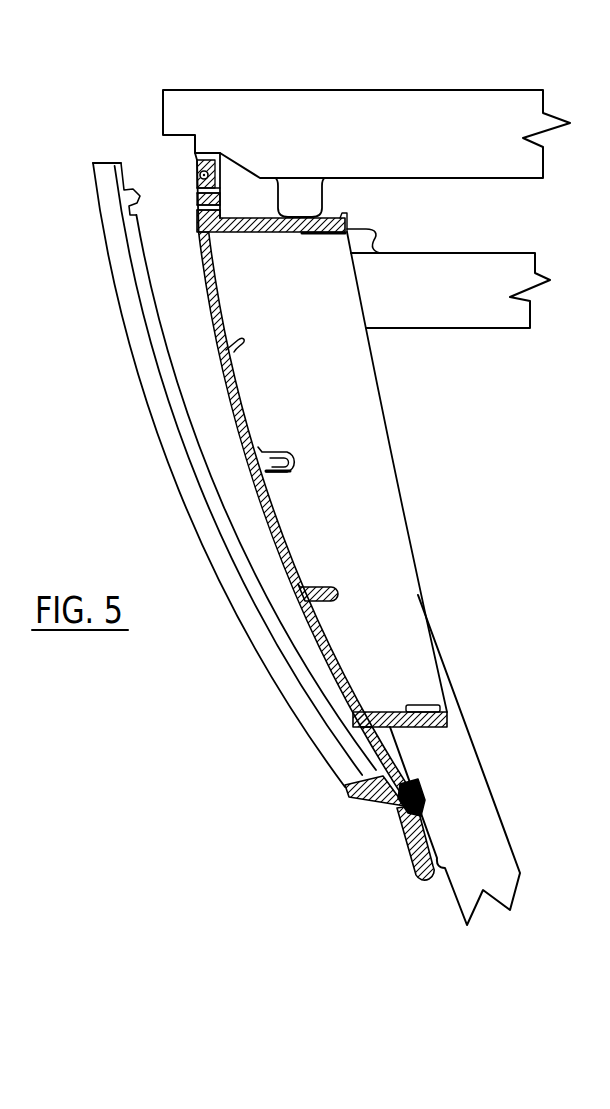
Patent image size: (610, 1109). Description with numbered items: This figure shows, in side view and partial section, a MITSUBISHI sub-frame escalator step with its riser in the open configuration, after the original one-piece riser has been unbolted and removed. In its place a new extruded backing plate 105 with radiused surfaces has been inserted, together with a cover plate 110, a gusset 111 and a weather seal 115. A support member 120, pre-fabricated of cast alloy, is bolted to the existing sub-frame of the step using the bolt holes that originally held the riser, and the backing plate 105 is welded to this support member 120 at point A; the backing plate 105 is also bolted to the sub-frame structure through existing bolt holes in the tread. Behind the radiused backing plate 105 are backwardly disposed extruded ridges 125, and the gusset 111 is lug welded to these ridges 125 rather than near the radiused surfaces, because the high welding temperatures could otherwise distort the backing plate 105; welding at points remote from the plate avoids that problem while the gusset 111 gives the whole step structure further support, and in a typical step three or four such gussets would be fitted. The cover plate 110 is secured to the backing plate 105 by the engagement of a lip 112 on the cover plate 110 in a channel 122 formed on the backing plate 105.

The extruded backing plate 105 is at (197, 213).
The weather seal 115 is at (200, 172).
The cover plate 110 is at (152, 432).
The gusset 111 is at (373, 470).
The extruded ridges 125 is at (323, 583).
The lip 112 is at (388, 765).
The channel 122 is at (418, 796).
The support member 120 is at (413, 832).
The weld point A is at (388, 814).